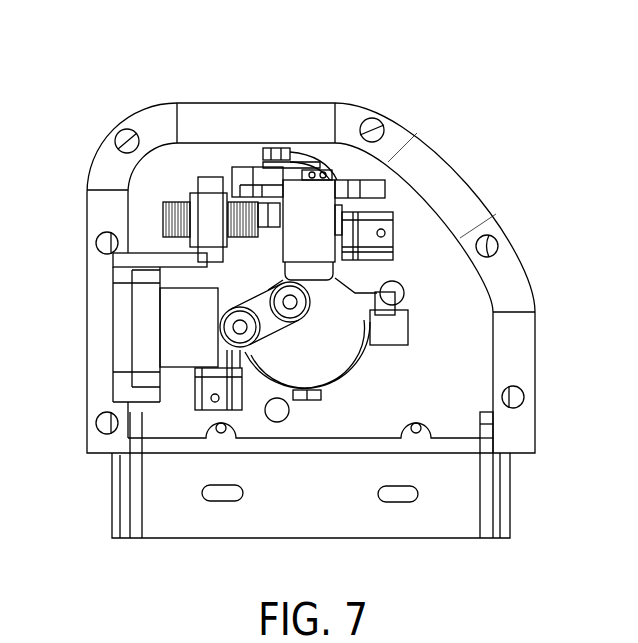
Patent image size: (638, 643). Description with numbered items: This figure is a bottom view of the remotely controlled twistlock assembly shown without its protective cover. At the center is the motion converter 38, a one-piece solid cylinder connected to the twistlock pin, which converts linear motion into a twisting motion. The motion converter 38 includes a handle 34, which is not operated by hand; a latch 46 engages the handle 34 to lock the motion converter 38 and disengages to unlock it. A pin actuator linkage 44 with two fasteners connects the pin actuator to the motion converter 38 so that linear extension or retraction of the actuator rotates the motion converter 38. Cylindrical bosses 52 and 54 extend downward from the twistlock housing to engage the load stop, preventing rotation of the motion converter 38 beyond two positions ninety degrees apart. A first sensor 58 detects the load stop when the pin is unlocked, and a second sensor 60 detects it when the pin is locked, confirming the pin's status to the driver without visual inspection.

The handle 34 is at (332, 182).
The latch 46 is at (375, 190).
The second sensor 60 is at (384, 228).
The cylindrical boss 52 is at (400, 297).
The pin actuator linkage 44 is at (250, 310).
The first sensor 58 is at (203, 390).
The cylindrical boss 54 is at (277, 422).
The motion converter 38 is at (367, 363).